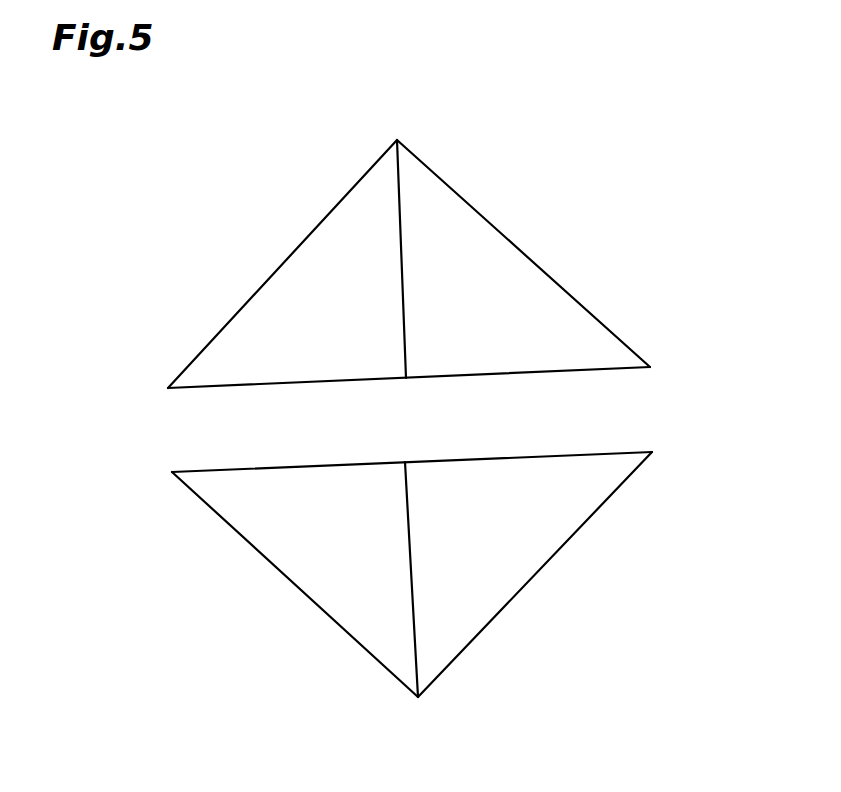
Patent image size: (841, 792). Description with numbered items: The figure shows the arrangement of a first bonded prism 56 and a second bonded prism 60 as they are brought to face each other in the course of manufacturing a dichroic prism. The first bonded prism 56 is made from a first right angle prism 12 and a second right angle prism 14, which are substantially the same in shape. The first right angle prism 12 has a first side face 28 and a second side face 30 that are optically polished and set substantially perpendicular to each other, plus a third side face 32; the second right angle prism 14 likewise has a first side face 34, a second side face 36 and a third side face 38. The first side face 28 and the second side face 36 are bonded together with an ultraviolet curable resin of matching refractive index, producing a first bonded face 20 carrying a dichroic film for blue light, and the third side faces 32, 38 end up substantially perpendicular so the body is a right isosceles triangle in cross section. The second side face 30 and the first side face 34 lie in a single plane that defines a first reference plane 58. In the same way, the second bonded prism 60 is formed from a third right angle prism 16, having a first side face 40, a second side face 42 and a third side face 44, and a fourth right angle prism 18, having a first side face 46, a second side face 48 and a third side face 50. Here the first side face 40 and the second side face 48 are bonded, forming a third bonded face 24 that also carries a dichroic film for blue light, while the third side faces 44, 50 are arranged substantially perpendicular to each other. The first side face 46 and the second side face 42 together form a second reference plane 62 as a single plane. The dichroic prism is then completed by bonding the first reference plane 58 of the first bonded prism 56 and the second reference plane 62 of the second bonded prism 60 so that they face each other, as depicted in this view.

The first right angle prism 12 is at (381, 166).
The second right angle prism 14 is at (465, 223).
The third right angle prism 16 is at (612, 488).
The fourth right angle prism 18 is at (215, 495).
The first bonded face 20 is at (395, 138).
The third bonded face 24 is at (424, 677).
The first side face 28 is at (406, 356).
The second side face 30 is at (188, 388).
The third side face 32 is at (287, 253).
The first side face 34 is at (568, 372).
The second side face 36 is at (406, 352).
The third side face 38 is at (517, 246).
The first side face 40 is at (409, 475).
The second side face 42 is at (546, 452).
The third side face 44 is at (568, 545).
The first side face 46 is at (228, 468).
The second side face 48 is at (410, 483).
The third side face 50 is at (292, 583).
The first bonded prism 56 is at (424, 158).
The first reference plane 58 is at (625, 368).
The second bonded prism 60 is at (390, 673).
The second reference plane 62 is at (633, 453).